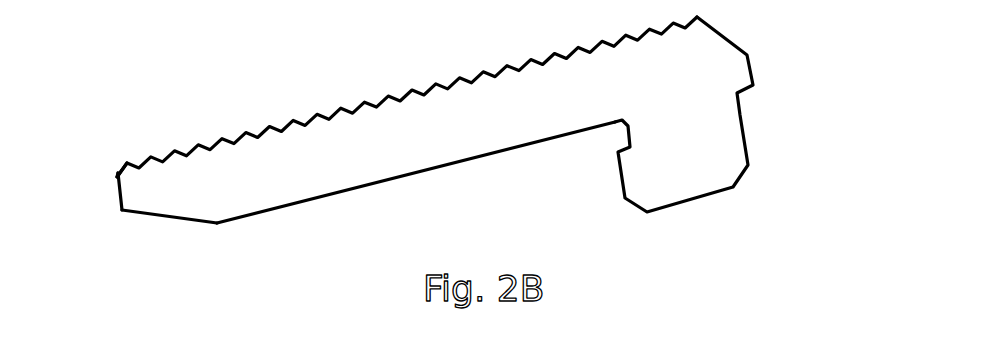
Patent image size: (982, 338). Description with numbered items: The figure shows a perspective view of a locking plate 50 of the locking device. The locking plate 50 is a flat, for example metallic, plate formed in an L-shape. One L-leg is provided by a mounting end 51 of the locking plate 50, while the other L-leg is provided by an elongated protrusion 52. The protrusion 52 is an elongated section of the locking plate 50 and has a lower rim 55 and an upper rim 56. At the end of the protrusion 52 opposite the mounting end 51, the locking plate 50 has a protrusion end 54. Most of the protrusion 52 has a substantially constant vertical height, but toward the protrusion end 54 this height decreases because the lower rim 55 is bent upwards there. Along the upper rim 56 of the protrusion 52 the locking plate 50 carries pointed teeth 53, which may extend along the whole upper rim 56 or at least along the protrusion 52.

The locking plate 50 is at (448, 157).
The mounting end 51 is at (713, 123).
The protrusion 52 is at (323, 182).
The pointed teeth 53 is at (372, 95).
The protrusion end 54 is at (122, 210).
The lower rim 55 is at (463, 163).
The upper rim 56 is at (163, 156).